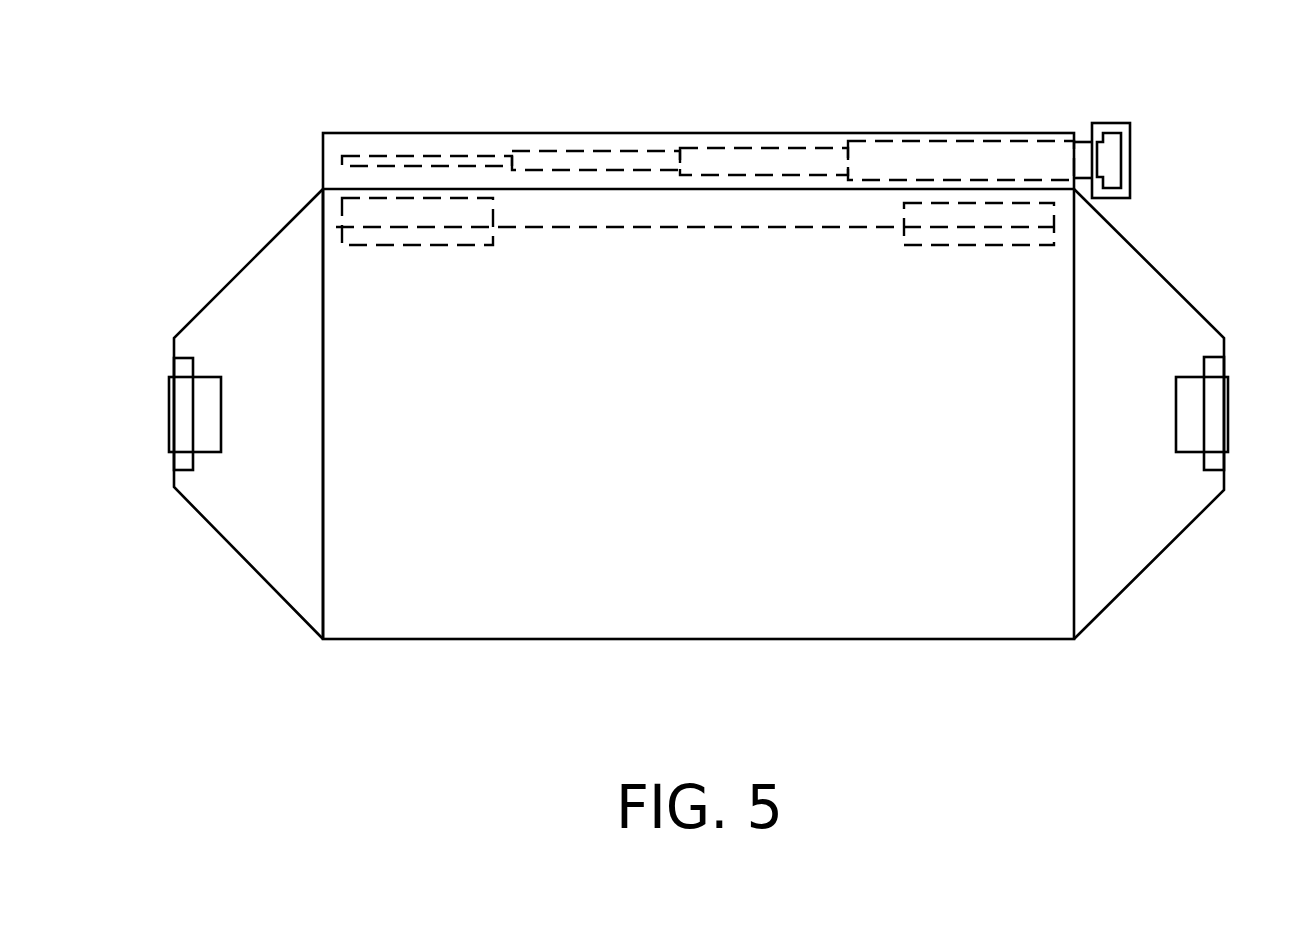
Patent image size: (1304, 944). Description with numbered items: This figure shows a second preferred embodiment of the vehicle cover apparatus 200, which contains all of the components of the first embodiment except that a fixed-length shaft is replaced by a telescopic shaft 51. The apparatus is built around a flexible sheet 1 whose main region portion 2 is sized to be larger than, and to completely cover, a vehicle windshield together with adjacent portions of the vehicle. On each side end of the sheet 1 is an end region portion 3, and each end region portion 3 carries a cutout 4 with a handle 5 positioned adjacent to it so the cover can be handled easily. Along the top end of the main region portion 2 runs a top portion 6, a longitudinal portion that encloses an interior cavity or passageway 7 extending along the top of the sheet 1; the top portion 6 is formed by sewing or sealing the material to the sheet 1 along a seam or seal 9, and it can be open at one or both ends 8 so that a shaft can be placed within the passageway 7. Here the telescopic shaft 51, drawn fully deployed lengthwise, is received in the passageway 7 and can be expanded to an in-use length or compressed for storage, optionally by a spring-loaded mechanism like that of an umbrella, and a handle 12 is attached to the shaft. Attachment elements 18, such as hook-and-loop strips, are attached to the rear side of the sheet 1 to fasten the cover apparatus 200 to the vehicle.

The cover apparatus 200 is at (474, 713).
The sheet 1 is at (962, 639).
The main region portion 2 is at (380, 612).
The end region portion 3 is at (257, 303).
The cutout 4 is at (203, 405).
The handle 5 is at (178, 423).
The top portion 6 is at (627, 135).
The interior cavity or passageway 7 is at (820, 138).
The telescopic shaft 51 is at (907, 160).
The ends of the top portion 8 is at (1074, 140).
The seam or seal 9 is at (678, 228).
The handle 12 is at (1132, 140).
The attachment elements 18 is at (353, 207).